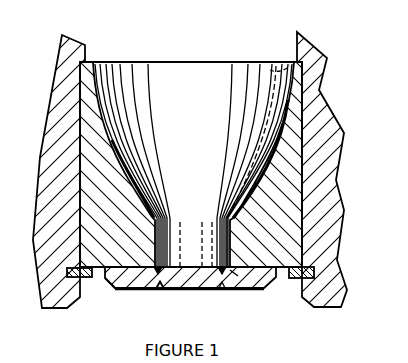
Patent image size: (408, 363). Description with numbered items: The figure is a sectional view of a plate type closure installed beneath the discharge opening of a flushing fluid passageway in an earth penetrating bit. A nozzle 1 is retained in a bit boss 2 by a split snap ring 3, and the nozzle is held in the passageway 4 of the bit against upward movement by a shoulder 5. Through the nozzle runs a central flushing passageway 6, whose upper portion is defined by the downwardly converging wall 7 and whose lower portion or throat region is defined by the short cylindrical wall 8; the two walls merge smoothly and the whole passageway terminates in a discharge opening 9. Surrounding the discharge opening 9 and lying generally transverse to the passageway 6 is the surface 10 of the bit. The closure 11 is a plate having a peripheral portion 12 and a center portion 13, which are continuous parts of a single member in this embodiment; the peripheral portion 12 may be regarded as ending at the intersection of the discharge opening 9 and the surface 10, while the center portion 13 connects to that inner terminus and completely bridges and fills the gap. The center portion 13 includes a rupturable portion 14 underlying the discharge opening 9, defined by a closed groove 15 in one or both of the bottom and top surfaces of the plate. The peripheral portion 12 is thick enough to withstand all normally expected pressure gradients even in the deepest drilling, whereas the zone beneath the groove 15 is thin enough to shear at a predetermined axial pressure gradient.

The nozzle 1 is at (270, 174).
The bit boss 2 is at (322, 235).
The split snap ring 3 is at (316, 270).
The passageway 4 is at (261, 49).
The shoulder 5 is at (291, 68).
The flushing passageway 6 is at (228, 134).
The downwardly converging wall 7 is at (283, 122).
The short cylindrical wall 8 is at (225, 244).
The discharge opening 9 is at (193, 265).
The surface 10 is at (98, 276).
The closure 11 is at (110, 290).
The peripheral portion 12 is at (133, 290).
The center portion 13 is at (234, 273).
The rupturable portion 14 is at (165, 290).
The closed groove 15 is at (225, 266).